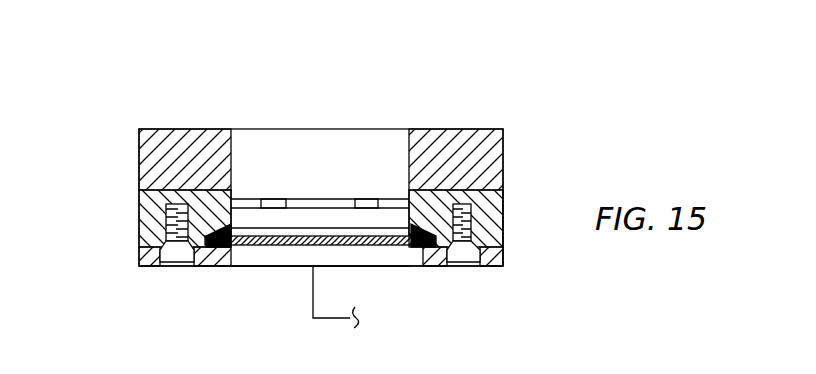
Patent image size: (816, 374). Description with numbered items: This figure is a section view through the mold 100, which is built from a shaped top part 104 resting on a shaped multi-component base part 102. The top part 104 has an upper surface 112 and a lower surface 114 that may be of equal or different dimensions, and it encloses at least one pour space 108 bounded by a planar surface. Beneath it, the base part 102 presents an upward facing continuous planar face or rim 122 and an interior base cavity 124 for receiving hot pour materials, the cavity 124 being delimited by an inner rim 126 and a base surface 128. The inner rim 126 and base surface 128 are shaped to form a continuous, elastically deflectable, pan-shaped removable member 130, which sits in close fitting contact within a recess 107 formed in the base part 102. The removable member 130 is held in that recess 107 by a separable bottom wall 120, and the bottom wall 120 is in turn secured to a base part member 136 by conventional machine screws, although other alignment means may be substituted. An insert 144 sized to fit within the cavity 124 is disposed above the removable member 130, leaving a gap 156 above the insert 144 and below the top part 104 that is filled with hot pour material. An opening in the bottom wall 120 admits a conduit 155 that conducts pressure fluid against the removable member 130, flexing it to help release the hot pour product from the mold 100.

The mold 100 is at (585, 144).
The base part 102 is at (130, 193).
The top part 104 is at (445, 129).
The recess 107 is at (222, 250).
The pour space 108 is at (393, 172).
The upper surface 112 is at (168, 128).
The lower surface 114 is at (508, 197).
The bottom wall 120 is at (504, 260).
The rim 122 is at (163, 189).
The base cavity 124 is at (318, 222).
The inner rim 126 is at (410, 214).
The base surface 128 is at (268, 217).
The removable member 130 is at (298, 268).
The base part member 136 is at (505, 224).
The insert 144 is at (255, 200).
The conduit 155 is at (342, 320).
The gap 156 is at (345, 200).